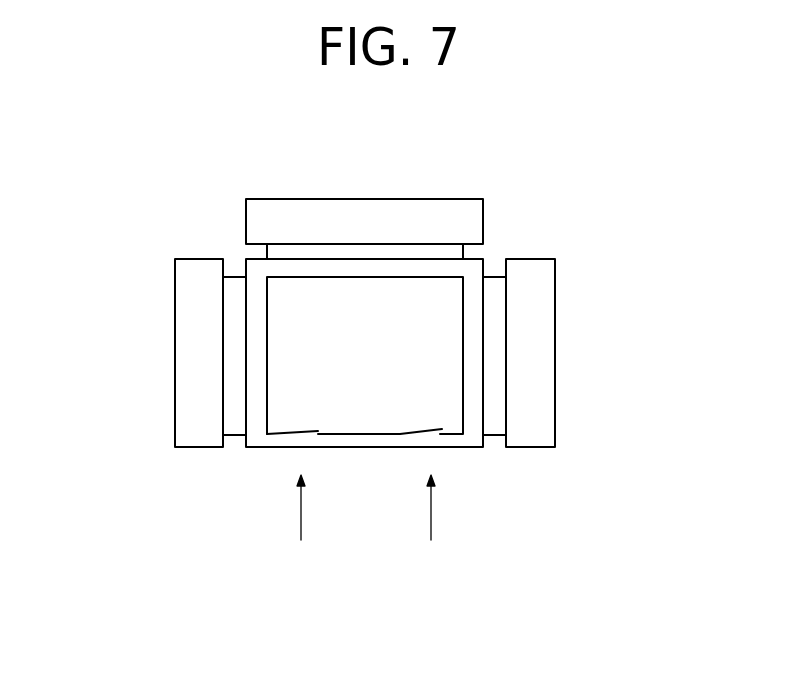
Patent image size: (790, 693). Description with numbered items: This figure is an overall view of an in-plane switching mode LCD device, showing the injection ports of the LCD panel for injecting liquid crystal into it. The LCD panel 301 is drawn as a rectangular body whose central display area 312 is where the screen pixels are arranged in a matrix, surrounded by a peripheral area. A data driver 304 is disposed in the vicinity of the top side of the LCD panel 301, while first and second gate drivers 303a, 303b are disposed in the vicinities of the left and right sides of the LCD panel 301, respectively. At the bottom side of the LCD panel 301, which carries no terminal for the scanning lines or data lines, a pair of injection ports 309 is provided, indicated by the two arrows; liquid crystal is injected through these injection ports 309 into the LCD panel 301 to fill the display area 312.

The LCD panel 301 is at (443, 447).
The display area 312 is at (453, 276).
The data driver 304 is at (428, 199).
The first gate driver 303a is at (175, 385).
The second gate driver 303b is at (555, 382).
The injection ports 309 is at (365, 527).